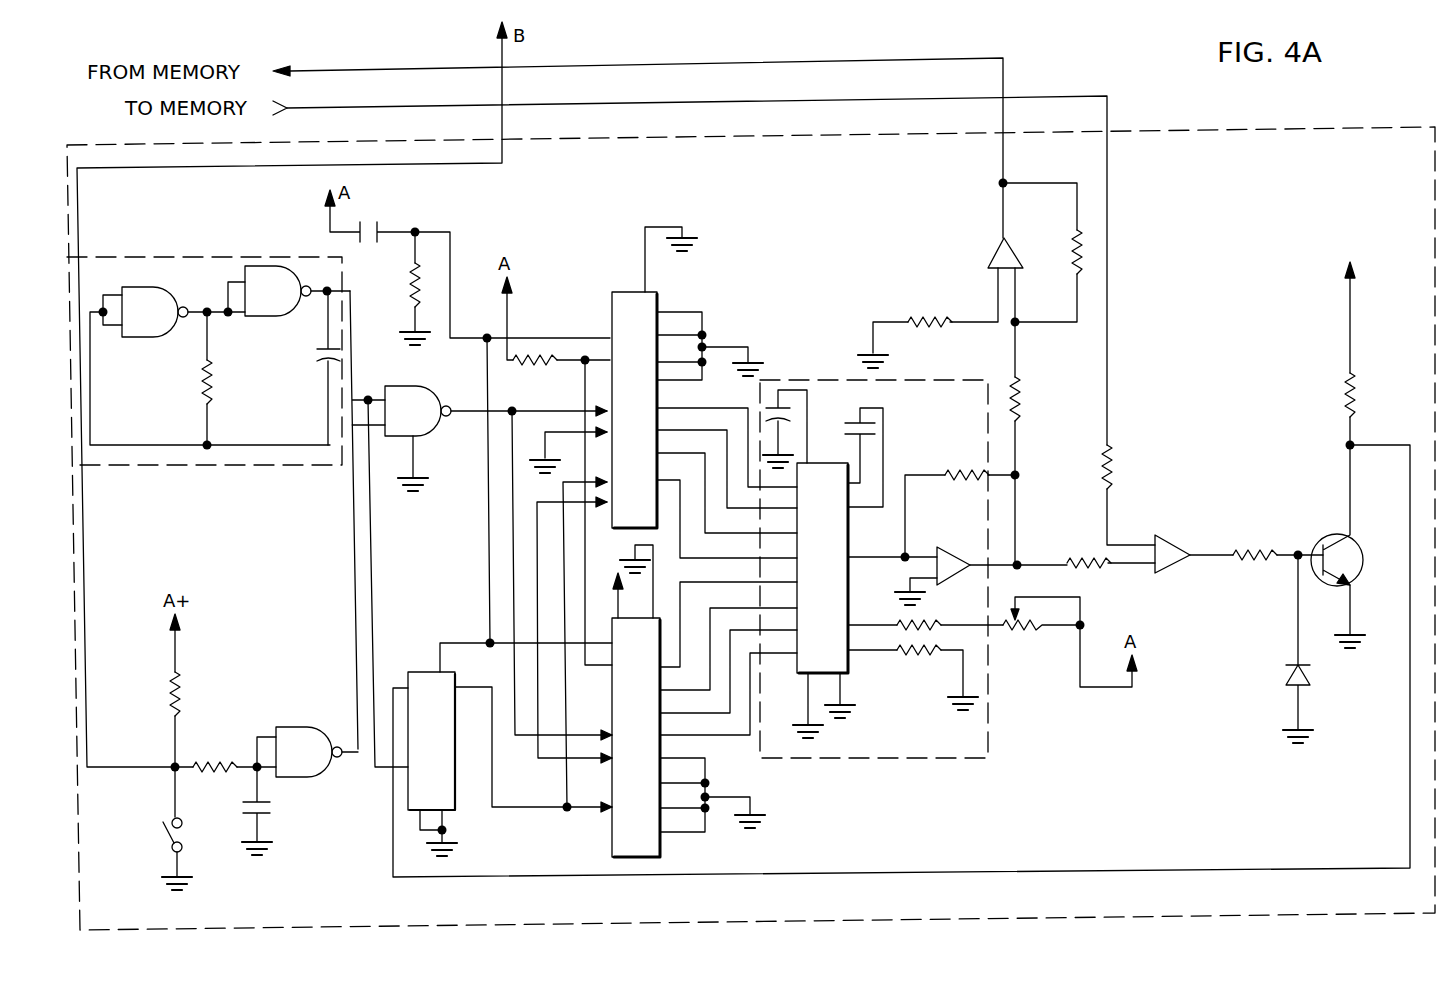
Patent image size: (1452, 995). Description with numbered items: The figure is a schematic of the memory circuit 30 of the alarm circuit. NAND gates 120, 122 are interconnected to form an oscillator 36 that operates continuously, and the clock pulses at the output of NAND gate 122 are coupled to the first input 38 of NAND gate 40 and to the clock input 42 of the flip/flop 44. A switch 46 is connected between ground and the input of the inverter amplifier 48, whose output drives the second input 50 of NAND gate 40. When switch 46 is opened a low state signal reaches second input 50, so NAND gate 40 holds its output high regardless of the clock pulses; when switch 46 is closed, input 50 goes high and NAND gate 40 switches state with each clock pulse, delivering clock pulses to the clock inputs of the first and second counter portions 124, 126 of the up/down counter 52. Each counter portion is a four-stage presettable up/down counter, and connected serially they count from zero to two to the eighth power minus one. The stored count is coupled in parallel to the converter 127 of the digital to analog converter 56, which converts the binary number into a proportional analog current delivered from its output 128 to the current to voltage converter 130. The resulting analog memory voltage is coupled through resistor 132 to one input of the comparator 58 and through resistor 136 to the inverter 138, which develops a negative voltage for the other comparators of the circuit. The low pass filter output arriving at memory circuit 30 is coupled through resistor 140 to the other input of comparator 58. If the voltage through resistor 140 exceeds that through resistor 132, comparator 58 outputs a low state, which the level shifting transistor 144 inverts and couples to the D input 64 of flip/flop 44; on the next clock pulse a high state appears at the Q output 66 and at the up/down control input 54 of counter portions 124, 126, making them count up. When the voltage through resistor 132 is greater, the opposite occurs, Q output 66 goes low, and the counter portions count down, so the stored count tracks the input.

The memory circuit 30 is at (1173, 128).
The oscillator 36 is at (217, 467).
The input of NAND gate 38 is at (369, 398).
The NAND gate 40 is at (410, 388).
The clock input of bistable multivibrator 42 is at (405, 770).
The bistable multivibrator 44 is at (462, 800).
The switch 46 is at (163, 828).
The inverter amplifier 48 is at (318, 777).
The second input of NAND gate 50 is at (385, 432).
The up/down counter 52 is at (697, 300).
The up/down control input 54 is at (612, 480).
The digital to analog converter 56 is at (972, 762).
The comparator 58 is at (1172, 543).
The D input 64 is at (410, 686).
The Q output 66 is at (457, 682).
The NAND gate 120 is at (170, 340).
The NAND gate 122 is at (270, 318).
The first counter portion 124 is at (616, 303).
The second counter portion 126 is at (665, 838).
The converter 127 is at (822, 465).
The output of converter 128 is at (850, 555).
The current to voltage converter 130 is at (948, 551).
The resistor 132 is at (1088, 558).
The resistor 136 is at (1028, 397).
The inverter 138 is at (993, 255).
The resistor 140 is at (1120, 473).
The level shifting transistor 144 is at (1328, 527).